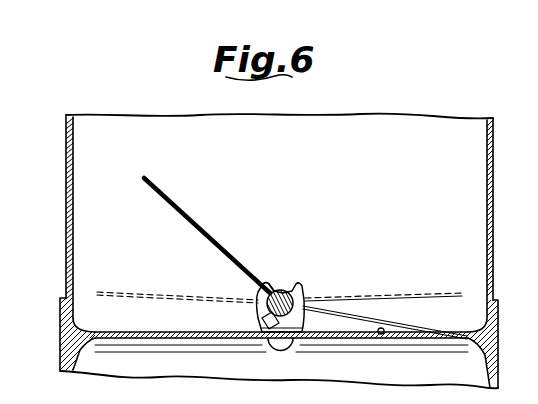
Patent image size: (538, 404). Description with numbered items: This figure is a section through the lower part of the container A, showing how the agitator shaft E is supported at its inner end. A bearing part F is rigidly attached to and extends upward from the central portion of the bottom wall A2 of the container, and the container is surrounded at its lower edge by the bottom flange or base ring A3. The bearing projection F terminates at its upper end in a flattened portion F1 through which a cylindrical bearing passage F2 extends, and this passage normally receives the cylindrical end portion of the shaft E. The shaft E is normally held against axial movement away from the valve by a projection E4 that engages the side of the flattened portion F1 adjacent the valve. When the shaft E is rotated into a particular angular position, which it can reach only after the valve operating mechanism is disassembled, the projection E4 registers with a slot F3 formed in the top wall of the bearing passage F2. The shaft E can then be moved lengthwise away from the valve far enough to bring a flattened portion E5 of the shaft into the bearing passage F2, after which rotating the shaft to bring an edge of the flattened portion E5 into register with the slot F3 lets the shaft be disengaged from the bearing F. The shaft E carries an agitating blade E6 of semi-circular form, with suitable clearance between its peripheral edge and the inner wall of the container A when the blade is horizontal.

The container A is at (495, 218).
The bottom wall A2 is at (384, 334).
The base ring A3 is at (500, 341).
The agitator shaft E is at (304, 300).
The projection E4 is at (258, 318).
The flattened portion E5 is at (290, 286).
The agitating blade E6 is at (156, 184).
The bearing part F is at (293, 327).
The flattened portion F1 is at (301, 288).
The bearing passage F2 is at (262, 306).
The slot F3 is at (282, 283).